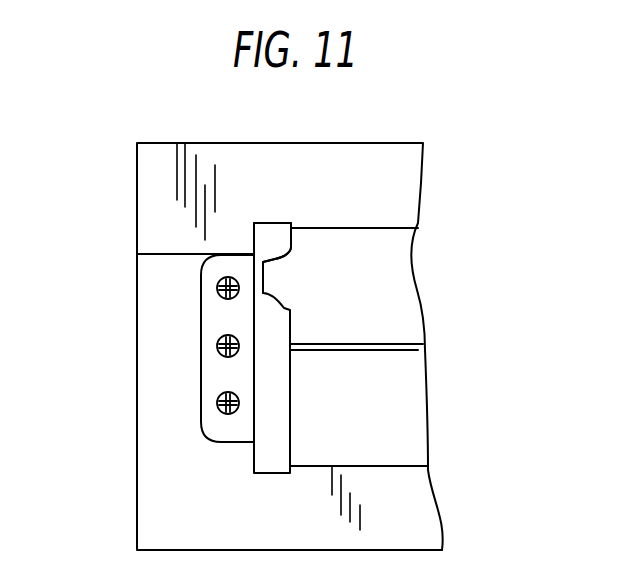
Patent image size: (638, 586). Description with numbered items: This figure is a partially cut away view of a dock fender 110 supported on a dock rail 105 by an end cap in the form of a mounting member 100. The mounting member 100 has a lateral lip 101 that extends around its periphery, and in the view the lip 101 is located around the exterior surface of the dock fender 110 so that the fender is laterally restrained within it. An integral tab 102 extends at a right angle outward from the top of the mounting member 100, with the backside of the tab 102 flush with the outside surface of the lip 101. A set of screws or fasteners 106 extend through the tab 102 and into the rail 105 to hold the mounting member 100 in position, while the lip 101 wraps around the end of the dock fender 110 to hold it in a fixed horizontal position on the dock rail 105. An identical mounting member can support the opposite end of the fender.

The mounting member 100 is at (263, 458).
The lateral lip 101 is at (268, 235).
The integral tab 102 is at (201, 282).
The rail 105 is at (329, 180).
The screws or fasteners 106 is at (216, 400).
The dock fender 110 is at (373, 403).